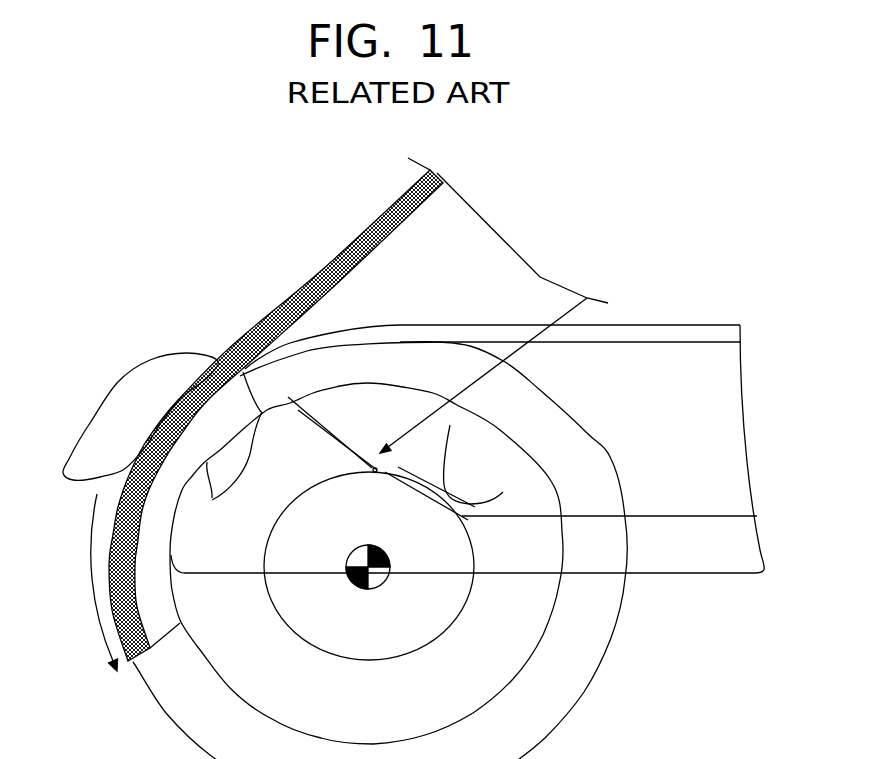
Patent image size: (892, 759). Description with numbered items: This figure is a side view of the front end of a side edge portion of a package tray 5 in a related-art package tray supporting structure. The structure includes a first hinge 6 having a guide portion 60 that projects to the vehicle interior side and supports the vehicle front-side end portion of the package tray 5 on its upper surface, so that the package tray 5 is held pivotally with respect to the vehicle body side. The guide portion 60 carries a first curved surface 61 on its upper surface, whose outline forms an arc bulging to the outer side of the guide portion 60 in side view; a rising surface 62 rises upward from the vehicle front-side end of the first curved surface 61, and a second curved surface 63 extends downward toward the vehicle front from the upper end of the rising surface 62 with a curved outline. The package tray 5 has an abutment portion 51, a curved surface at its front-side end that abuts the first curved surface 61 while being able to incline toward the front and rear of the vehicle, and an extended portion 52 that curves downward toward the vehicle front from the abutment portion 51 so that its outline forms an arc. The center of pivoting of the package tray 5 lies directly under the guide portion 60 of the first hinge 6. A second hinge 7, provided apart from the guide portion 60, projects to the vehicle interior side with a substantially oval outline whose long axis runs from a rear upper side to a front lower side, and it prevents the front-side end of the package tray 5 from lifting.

The package tray 5 is at (332, 262).
The first hinge 6 is at (507, 578).
The second hinge 7 is at (113, 412).
The abutment portion 51 is at (375, 470).
The extended portion 52 is at (193, 455).
The guide portion 60 is at (386, 522).
The first curved surface 61 is at (461, 472).
The rising surface 62 is at (344, 432).
The second curved surface 63 is at (245, 373).